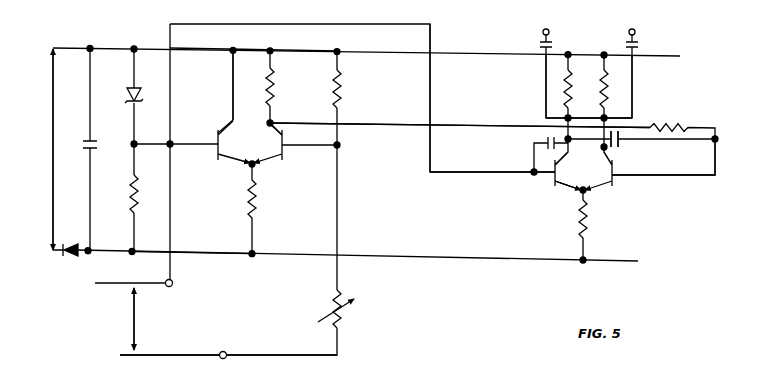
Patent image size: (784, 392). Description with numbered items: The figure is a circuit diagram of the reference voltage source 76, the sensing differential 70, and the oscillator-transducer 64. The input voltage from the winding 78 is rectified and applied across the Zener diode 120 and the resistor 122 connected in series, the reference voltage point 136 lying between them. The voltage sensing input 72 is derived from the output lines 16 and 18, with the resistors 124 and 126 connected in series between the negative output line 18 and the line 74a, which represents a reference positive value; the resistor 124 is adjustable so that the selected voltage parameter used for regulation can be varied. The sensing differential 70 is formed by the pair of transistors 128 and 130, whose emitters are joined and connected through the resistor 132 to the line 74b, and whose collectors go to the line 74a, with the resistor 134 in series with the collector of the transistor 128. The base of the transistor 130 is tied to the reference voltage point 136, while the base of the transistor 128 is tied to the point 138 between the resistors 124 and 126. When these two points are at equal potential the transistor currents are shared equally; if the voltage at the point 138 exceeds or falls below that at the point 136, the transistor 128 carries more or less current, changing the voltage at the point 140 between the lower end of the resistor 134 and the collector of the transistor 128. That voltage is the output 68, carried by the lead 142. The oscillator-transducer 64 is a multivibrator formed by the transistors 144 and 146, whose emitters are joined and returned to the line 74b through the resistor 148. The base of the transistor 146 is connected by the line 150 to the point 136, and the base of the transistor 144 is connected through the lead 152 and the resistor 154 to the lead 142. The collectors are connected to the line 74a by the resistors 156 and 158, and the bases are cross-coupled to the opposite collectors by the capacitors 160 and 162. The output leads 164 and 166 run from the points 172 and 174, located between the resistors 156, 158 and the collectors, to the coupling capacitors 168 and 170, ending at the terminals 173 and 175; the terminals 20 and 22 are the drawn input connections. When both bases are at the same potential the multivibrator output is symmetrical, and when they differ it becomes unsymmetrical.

The output line 16 is at (110, 281).
The negative output line 18 is at (158, 357).
The input terminal 20 is at (173, 283).
The input terminal 22 is at (223, 359).
The oscillator-transducer 64 is at (564, 192).
The output 68 is at (460, 112).
The sensing differential 70 is at (248, 125).
The voltage sensing input 72 is at (123, 319).
The line 74a is at (200, 50).
The line 74b is at (190, 246).
The reference voltage source 76 is at (136, 44).
The winding 78 is at (46, 149).
The Zener diode 120 is at (142, 95).
The resistor 122 is at (138, 196).
The resistor 124 is at (345, 262).
The resistor 126 is at (350, 100).
The transistor 128 is at (276, 152).
The transistor 130 is at (234, 142).
The resistor 132 is at (258, 200).
The resistor 134 is at (276, 93).
The reference voltage point 136 is at (137, 141).
The point 138 is at (340, 147).
The point 140 is at (274, 124).
The lead 142 is at (456, 125).
The transistor 144 is at (583, 172).
The transistor 146 is at (548, 178).
The resistor 148 is at (590, 212).
The line 150 is at (432, 82).
The lead 152 is at (700, 178).
The resistor 154 is at (672, 123).
The resistor 156 is at (616, 89).
The resistor 158 is at (582, 86).
The capacitor 160 is at (622, 144).
The capacitor 162 is at (540, 143).
The output lead 164 is at (634, 90).
The output lead 166 is at (544, 85).
The coupling capacitor 168 is at (640, 46).
The coupling capacitor 170 is at (556, 46).
The point 172 is at (600, 122).
The point 174 is at (560, 118).
The output terminal 173 is at (644, 25).
The output terminal 175 is at (545, 25).